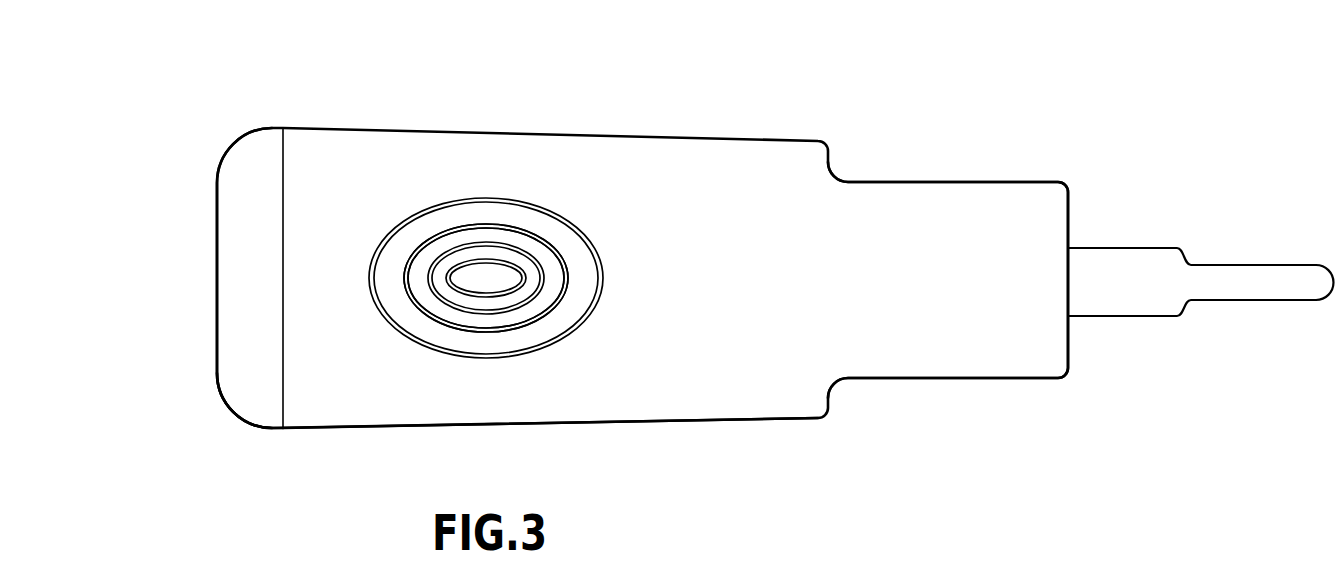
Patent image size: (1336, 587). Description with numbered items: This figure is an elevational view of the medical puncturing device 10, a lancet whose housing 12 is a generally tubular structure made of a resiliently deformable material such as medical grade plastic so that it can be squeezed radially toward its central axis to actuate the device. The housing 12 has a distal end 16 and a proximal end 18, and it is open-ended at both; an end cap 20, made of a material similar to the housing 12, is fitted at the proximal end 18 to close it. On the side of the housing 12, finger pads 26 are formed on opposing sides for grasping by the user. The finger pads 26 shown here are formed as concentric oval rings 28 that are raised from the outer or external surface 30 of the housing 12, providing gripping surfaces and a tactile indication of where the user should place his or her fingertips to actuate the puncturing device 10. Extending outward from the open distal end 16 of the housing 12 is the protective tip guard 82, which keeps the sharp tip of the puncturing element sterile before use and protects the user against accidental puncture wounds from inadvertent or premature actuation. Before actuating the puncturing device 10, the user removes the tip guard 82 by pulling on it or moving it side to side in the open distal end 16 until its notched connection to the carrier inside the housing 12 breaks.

The medical puncturing device 10 is at (300, 77).
The housing 12 is at (717, 421).
The distal end 16 is at (1063, 185).
The proximal end 18 is at (275, 445).
The end cap 20 is at (227, 152).
The finger pads 26 is at (542, 207).
The concentric oval rings 28 is at (560, 233).
The external surface 30 is at (703, 293).
The tip guard 82 is at (1192, 302).